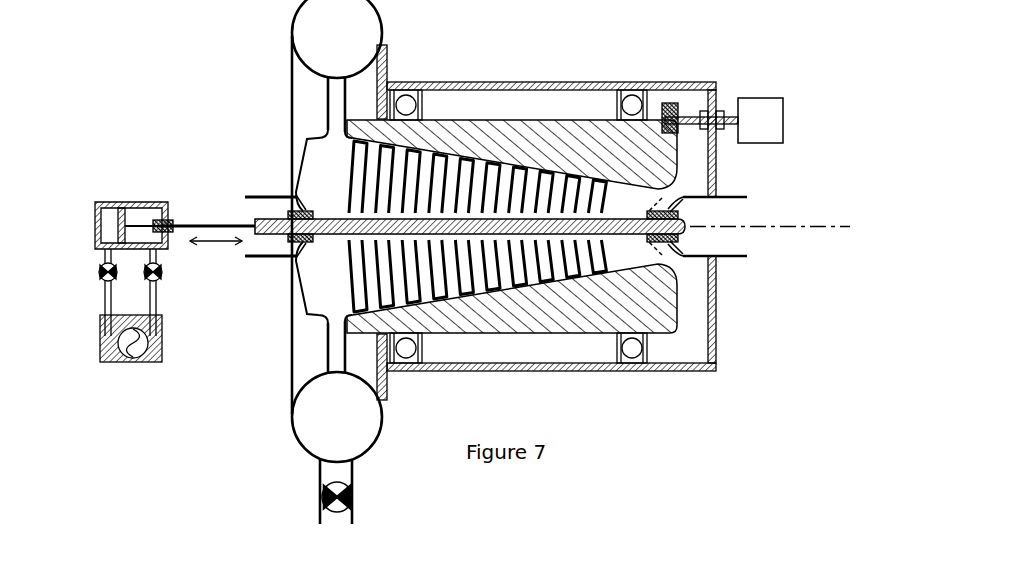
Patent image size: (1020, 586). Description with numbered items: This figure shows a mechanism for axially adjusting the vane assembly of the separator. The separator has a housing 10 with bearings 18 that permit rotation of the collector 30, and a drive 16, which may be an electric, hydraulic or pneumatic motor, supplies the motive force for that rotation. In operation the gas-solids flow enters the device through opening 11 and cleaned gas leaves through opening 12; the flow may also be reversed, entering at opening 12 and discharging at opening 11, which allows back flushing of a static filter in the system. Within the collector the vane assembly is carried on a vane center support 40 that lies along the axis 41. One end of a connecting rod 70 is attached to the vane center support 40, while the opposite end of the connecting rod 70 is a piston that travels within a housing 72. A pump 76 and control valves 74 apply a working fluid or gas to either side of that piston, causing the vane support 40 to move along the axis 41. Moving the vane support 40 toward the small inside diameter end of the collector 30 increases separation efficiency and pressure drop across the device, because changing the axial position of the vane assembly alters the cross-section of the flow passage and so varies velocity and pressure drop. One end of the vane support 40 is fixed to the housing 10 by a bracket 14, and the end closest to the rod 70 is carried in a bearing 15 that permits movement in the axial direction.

The separator housing 10 is at (466, 82).
The opening 11 is at (252, 210).
The opening 12 is at (722, 212).
The bracket 14 is at (295, 198).
The bearing 15 is at (295, 207).
The drive 16 is at (757, 118).
The bearings 18 is at (613, 88).
The collector 30 is at (655, 315).
The vane center support 40 is at (262, 238).
The axis 41 is at (767, 225).
The connecting rod 70 is at (197, 222).
The housing 72 is at (97, 207).
The control valves 74 is at (148, 274).
The pump 76 is at (162, 347).